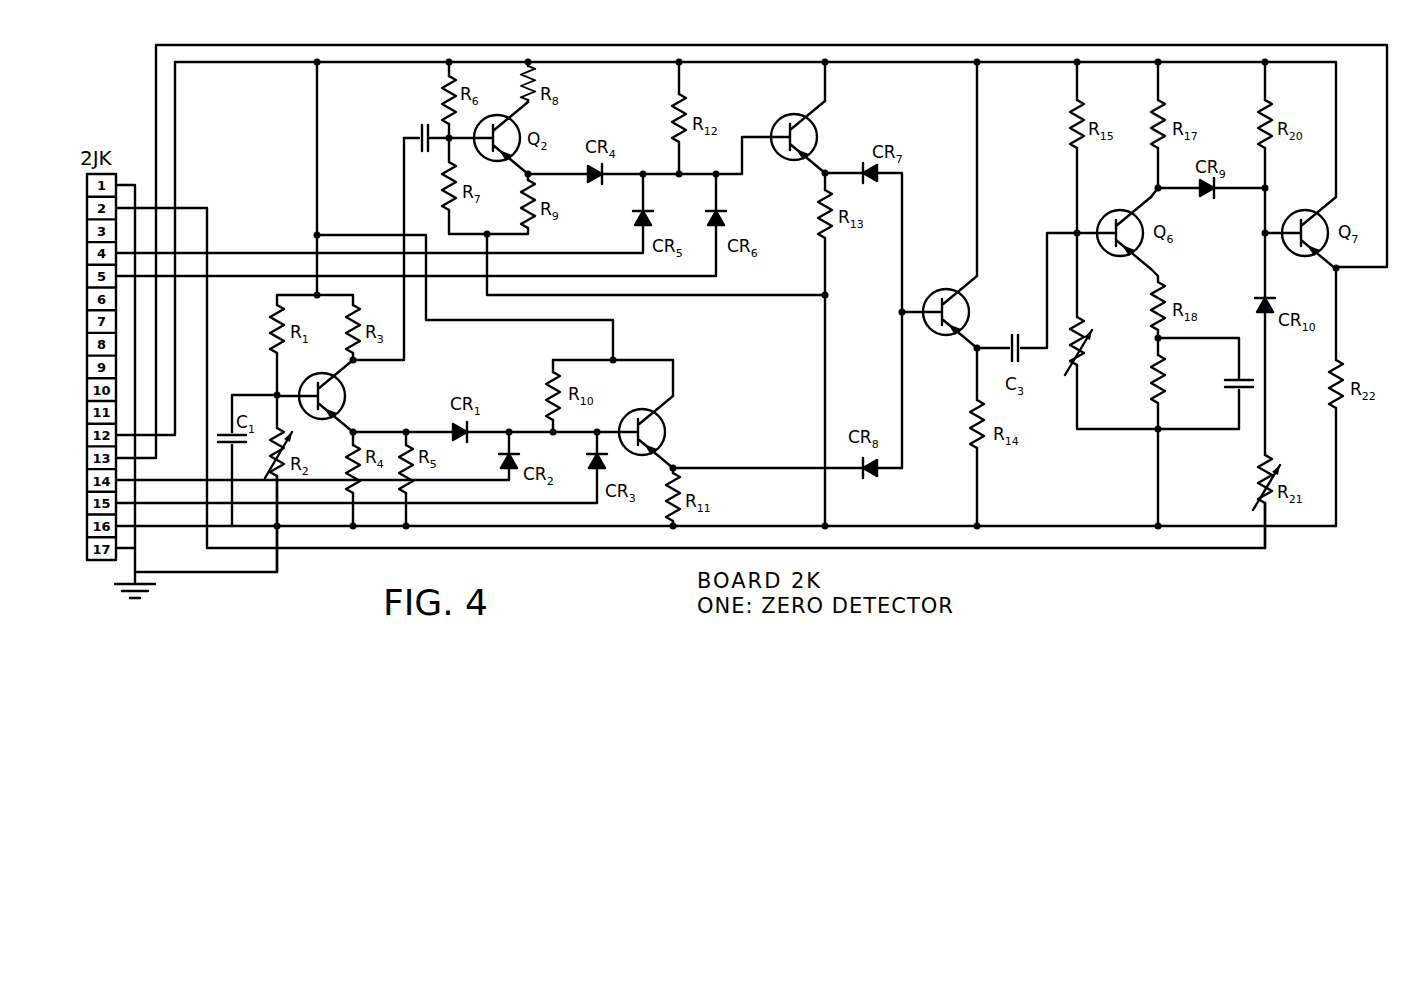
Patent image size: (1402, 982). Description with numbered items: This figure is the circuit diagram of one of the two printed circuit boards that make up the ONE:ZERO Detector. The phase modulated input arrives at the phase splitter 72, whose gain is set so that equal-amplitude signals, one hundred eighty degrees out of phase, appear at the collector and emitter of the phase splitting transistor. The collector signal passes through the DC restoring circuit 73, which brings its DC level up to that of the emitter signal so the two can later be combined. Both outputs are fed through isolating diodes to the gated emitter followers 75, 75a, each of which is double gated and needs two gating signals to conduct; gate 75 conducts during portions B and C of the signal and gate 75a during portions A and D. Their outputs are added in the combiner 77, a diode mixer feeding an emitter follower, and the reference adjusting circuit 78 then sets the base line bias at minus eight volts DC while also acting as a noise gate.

The phase splitter 72 is at (262, 372).
The DC restoring circuit 73 is at (400, 124).
The gated emitter follower 75 is at (858, 120).
The gated emitter follower 75a is at (687, 405).
The combiner 77 is at (950, 278).
The −8 volt DC reference adjusting circuit 78 is at (1132, 446).